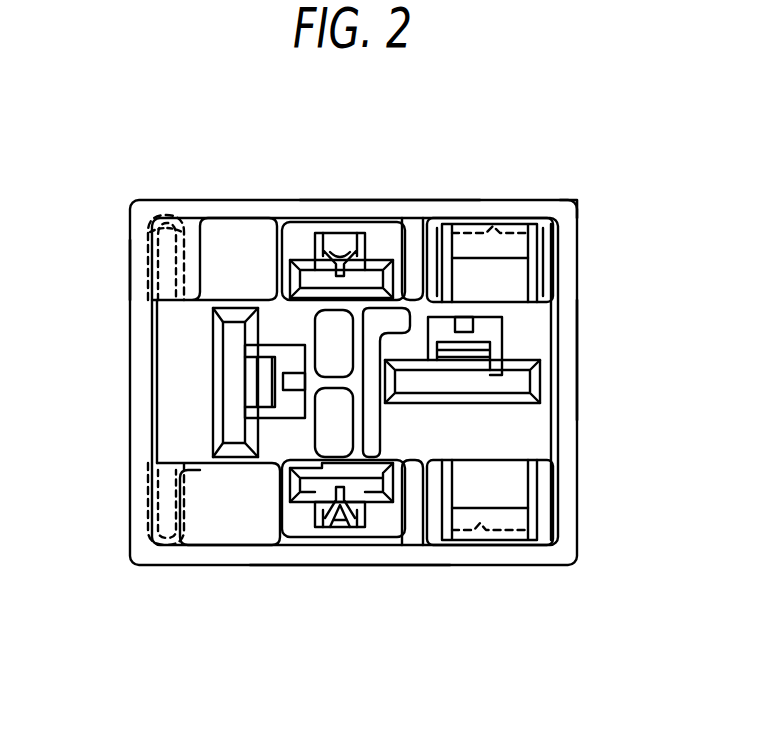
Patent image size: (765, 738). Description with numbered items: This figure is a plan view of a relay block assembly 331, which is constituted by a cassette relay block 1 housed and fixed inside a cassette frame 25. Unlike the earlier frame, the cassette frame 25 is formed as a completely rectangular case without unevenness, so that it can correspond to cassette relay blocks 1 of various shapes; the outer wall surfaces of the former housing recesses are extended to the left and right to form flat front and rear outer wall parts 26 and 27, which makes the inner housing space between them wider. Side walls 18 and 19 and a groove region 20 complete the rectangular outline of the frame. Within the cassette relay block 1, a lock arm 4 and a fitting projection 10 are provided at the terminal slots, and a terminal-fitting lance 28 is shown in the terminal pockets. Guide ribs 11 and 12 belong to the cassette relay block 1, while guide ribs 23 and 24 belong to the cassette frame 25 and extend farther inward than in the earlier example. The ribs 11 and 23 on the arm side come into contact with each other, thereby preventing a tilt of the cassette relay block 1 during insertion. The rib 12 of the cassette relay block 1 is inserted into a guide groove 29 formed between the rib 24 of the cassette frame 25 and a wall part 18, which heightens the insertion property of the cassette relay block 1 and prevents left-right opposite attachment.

The cassette relay block 1 is at (266, 246).
The lock arm 4 is at (518, 243).
The fitting projection 10 is at (492, 232).
The guide rib 11 is at (437, 257).
The guide rib 12 is at (168, 213).
The wall part 18 is at (127, 257).
The side wall 19 is at (580, 342).
The groove 20 is at (152, 300).
The guide rib 23 is at (415, 242).
The guide rib 24 is at (193, 263).
The cassette frame 25 is at (546, 195).
The front outer wall part 26 is at (395, 198).
The rear outer wall part 27 is at (348, 566).
The terminal-fitting lance 28 is at (470, 382).
The guide groove 29 is at (143, 223).
The relay block assembly 331 is at (659, 548).